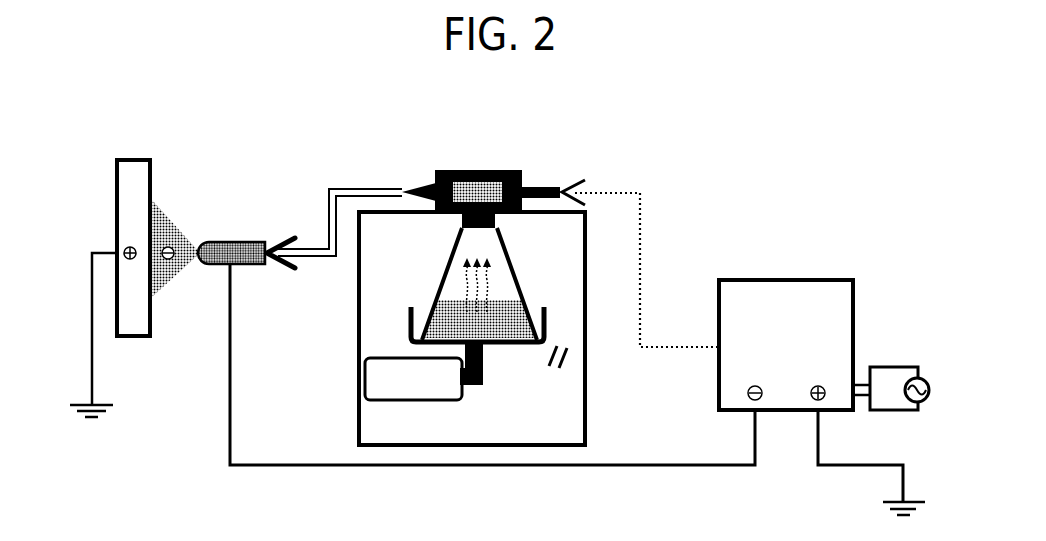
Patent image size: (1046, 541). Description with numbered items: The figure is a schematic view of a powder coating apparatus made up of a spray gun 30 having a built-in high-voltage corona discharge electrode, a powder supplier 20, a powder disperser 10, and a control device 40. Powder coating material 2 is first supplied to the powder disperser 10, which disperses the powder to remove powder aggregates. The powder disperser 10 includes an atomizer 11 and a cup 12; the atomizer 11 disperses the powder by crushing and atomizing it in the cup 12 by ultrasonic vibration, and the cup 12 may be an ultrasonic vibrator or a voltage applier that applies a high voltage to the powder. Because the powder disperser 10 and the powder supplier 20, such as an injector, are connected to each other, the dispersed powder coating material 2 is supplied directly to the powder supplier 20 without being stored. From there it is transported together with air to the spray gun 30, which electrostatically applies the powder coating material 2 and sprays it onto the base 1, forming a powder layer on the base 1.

The base 1 is at (133, 158).
The powder coating material 2 is at (181, 228).
The spray gun 30 is at (243, 238).
The powder supplier 20 is at (479, 170).
The cup 12 is at (447, 276).
The atomizer 11 is at (397, 357).
The powder disperser 10 is at (588, 402).
The control device 40 is at (782, 278).